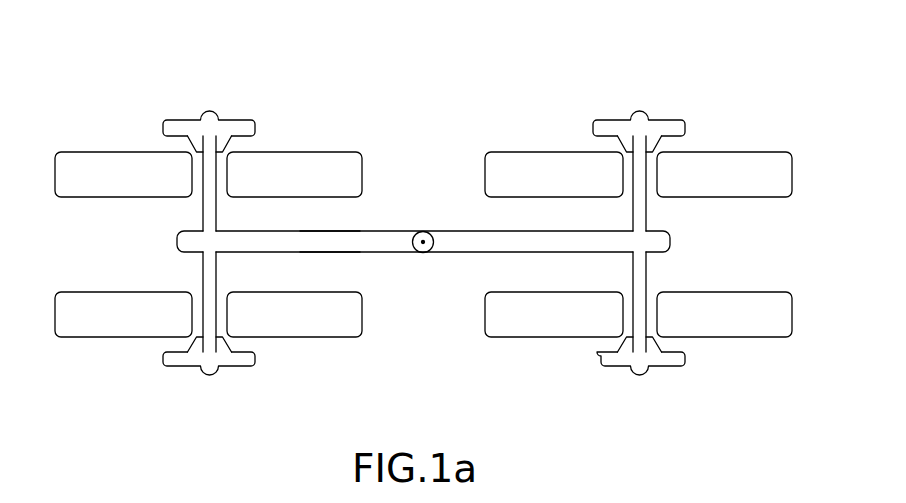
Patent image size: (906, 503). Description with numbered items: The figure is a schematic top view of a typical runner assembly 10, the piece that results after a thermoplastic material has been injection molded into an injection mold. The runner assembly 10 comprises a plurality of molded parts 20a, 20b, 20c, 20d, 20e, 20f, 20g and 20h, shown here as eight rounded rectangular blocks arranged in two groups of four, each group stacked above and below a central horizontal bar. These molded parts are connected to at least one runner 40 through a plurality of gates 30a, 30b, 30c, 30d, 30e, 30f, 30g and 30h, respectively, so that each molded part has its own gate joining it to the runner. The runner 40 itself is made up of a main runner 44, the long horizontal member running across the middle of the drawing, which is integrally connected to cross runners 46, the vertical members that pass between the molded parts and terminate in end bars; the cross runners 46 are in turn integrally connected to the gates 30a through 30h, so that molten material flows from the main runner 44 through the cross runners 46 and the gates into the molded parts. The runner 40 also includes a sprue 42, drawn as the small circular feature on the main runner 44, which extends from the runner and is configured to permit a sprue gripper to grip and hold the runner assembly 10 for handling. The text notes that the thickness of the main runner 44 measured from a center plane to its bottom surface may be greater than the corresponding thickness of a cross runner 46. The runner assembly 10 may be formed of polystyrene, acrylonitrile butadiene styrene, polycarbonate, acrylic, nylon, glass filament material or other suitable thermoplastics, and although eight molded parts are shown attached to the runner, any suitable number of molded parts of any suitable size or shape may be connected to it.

The runner assembly 10 is at (501, 70).
The molded part 20a is at (86, 189).
The molded part 20b is at (354, 174).
The molded part 20c is at (93, 305).
The molded part 20d is at (307, 298).
The molded part 20e is at (555, 188).
The molded part 20f is at (703, 187).
The molded part 20g is at (548, 325).
The molded part 20h is at (729, 300).
The gate 30a is at (182, 145).
The gate 30b is at (242, 144).
The gate 30c is at (183, 348).
The gate 30d is at (240, 348).
The gate 30e is at (605, 144).
The gate 30f is at (669, 141).
The gate 30g is at (613, 346).
The gate 30h is at (672, 347).
The runner 40 is at (463, 246).
The sprue 42 is at (427, 233).
The main runner 44 is at (377, 244).
The cross runner 46 is at (216, 208).